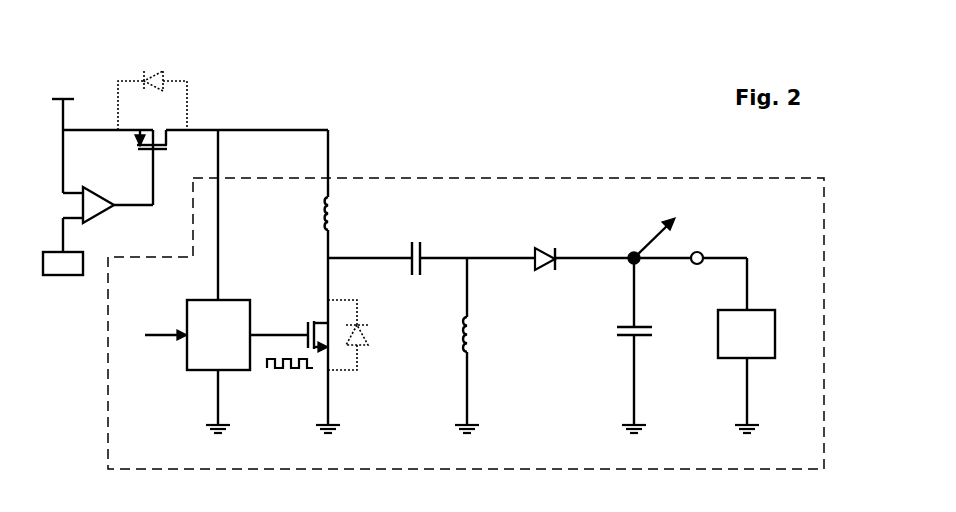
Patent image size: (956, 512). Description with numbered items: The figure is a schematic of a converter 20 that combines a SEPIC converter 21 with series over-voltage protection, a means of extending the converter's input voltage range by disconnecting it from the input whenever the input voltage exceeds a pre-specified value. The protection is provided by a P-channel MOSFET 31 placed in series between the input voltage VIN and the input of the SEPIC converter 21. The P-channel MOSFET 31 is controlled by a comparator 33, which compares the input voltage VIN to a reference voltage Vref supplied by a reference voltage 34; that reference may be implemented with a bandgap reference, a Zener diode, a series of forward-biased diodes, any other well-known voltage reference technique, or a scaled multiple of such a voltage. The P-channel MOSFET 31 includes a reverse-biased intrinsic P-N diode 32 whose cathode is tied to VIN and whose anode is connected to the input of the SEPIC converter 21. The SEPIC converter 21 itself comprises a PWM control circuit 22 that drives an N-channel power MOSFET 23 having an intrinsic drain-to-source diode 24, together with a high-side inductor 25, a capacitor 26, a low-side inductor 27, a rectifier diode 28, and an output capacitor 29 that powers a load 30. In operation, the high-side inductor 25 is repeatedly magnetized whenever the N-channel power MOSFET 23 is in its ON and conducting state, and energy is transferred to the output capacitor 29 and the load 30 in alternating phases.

The converter 20 is at (615, 81).
The SEPIC converter 21 is at (468, 177).
The PWM control circuit 22 is at (246, 373).
The N-channel power MOSFET 23 is at (305, 323).
The intrinsic drain-to-source diode 24 is at (368, 332).
The high-side inductor 25 is at (333, 207).
The capacitor 26 is at (418, 278).
The low-side inductor 27 is at (472, 318).
The rectifier diode 28 is at (557, 250).
The output capacitor 29 is at (616, 327).
The load 30 is at (776, 311).
The P-channel MOSFET 31 is at (146, 127).
The reverse-biased intrinsic P-N diode 32 is at (167, 73).
The comparator 33 is at (100, 216).
The reference voltage 34 is at (42, 253).